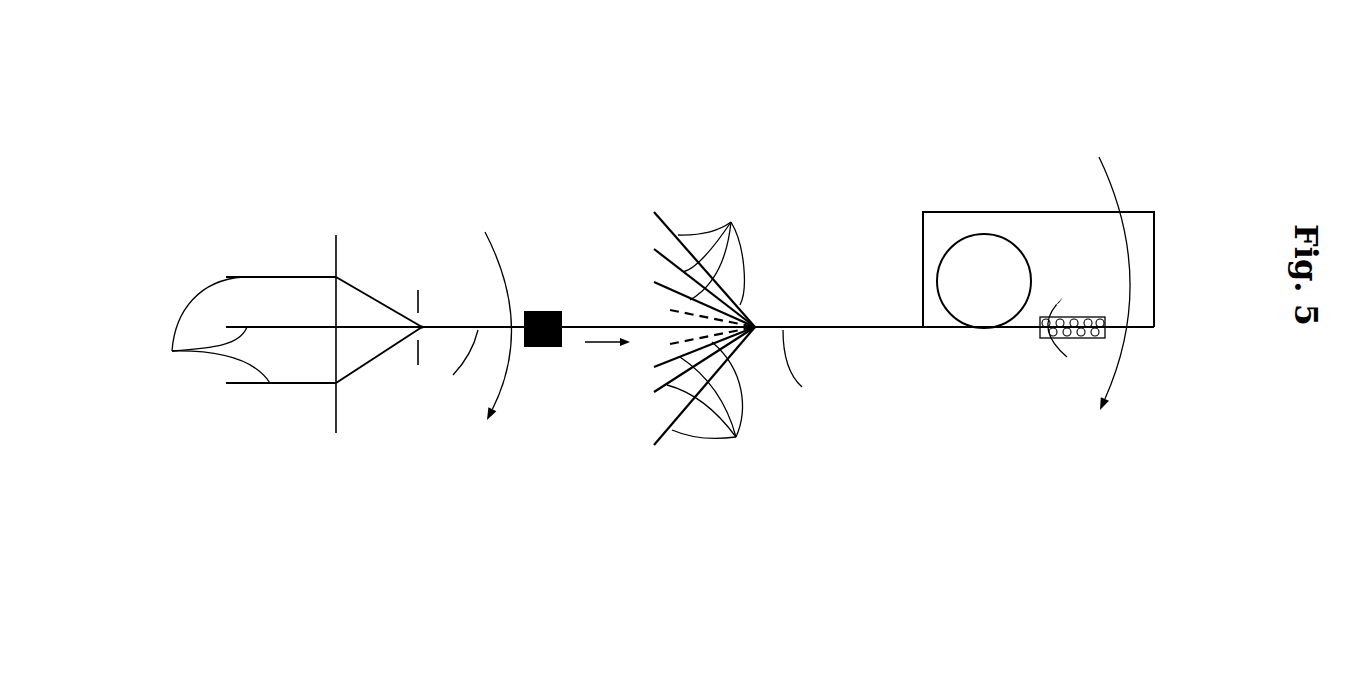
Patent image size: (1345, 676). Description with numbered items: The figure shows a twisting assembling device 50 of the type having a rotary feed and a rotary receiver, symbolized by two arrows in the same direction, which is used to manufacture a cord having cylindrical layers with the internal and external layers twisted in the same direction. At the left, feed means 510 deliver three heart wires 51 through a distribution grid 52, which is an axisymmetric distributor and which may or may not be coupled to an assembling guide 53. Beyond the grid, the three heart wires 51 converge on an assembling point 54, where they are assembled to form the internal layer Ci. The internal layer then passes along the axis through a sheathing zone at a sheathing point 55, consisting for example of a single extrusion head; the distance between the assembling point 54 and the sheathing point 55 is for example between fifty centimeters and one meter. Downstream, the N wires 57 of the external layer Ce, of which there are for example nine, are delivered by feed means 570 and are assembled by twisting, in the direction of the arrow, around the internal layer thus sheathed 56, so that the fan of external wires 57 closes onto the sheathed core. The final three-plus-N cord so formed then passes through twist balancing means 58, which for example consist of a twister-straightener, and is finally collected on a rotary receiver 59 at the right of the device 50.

The twisting assembling device 50 is at (835, 123).
The heart wires 51 is at (241, 301).
The feed means 510 is at (183, 276).
The distribution grid 52 is at (335, 245).
The assembling guide 53 is at (418, 345).
The assembling point 54 is at (437, 315).
The sheathing point 55 is at (543, 347).
The sheathed internal layer 56 is at (600, 327).
The wires of the external layer 57 is at (713, 331).
The feed means 570 is at (688, 202).
The twist balancing means 58 is at (1077, 317).
The rotary receiver 59 is at (1013, 350).